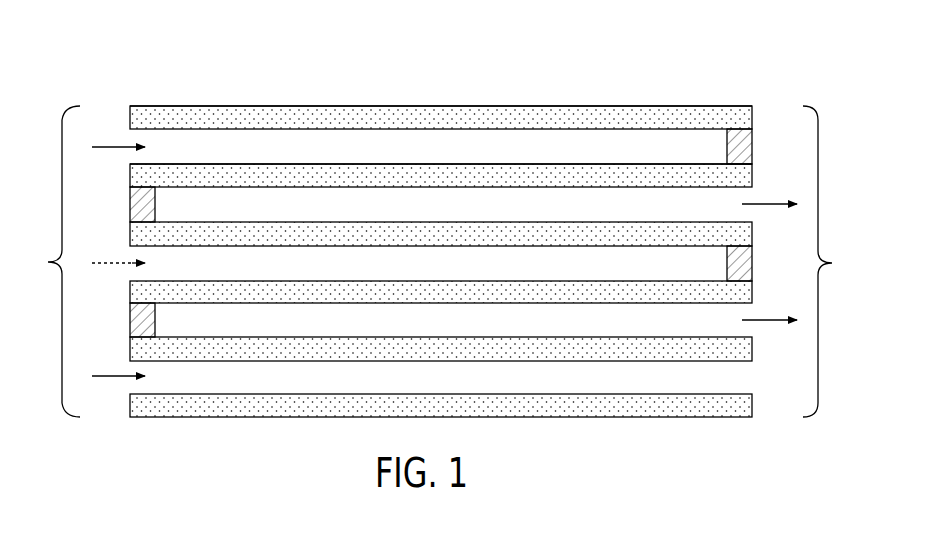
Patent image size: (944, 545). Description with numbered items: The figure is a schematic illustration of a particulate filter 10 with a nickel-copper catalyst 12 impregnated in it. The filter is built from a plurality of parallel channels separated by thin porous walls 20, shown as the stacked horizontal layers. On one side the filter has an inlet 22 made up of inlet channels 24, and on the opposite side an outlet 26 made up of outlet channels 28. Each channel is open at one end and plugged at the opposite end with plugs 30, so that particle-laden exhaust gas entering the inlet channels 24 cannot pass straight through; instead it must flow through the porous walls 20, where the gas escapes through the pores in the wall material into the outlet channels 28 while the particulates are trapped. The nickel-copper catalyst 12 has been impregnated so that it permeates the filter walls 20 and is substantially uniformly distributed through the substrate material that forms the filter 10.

The particulate filter 10 is at (215, 82).
The nickel-copper catalyst 12 is at (486, 117).
The thin porous walls 20 is at (381, 106).
The inlet 22 is at (80, 232).
The inlet channels 24 is at (108, 139).
The outlet 26 is at (805, 260).
The outlet channels 28 is at (767, 197).
The plugs 30 is at (132, 197).